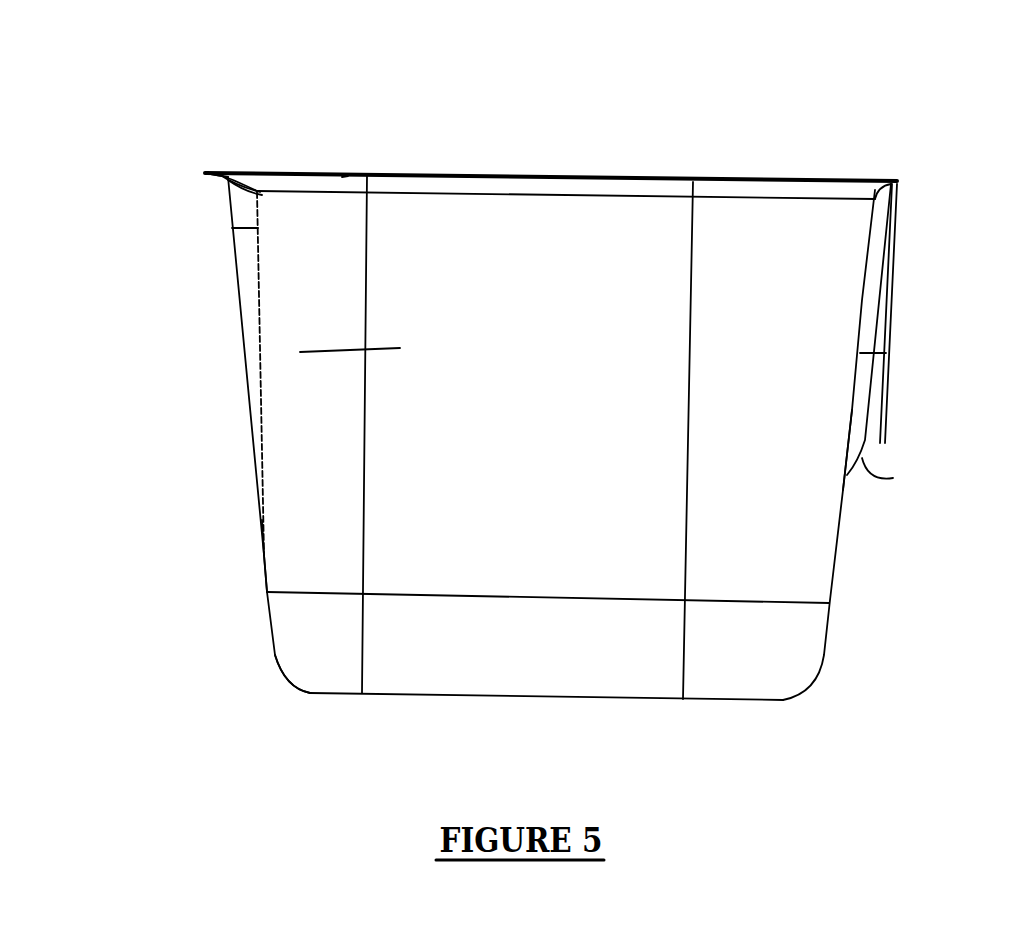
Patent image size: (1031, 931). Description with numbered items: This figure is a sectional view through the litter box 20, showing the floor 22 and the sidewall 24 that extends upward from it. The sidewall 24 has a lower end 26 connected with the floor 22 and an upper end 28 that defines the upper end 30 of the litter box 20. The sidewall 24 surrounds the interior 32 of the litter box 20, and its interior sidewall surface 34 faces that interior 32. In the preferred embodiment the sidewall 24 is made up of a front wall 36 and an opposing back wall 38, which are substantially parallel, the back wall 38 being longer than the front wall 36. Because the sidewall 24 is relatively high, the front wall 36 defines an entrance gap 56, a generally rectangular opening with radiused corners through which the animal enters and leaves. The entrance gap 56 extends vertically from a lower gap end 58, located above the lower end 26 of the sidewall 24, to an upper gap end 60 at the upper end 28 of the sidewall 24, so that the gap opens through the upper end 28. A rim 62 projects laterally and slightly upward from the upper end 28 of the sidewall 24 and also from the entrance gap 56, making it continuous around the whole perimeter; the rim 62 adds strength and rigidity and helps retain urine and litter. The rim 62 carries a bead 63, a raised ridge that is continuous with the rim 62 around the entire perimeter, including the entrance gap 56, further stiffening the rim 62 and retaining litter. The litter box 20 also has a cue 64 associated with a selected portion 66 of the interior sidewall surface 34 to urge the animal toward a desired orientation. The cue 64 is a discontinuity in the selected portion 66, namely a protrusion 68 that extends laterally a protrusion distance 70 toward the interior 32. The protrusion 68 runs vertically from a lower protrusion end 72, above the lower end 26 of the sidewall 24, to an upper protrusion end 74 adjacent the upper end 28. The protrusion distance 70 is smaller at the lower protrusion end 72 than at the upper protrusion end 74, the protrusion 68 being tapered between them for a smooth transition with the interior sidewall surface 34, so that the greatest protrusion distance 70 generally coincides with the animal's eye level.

The litter box 20 is at (549, 404).
The floor 22 is at (447, 700).
The sidewall 24 is at (836, 568).
The lower end 26 is at (273, 658).
The upper end 28 is at (822, 193).
The upper end of the litter box 30 is at (455, 168).
The interior 32 is at (565, 267).
The interior sidewall surface 34 is at (833, 535).
The front wall 36 is at (829, 635).
The back wall 38 is at (263, 573).
The entrance gap 56 is at (898, 348).
The lower gap end 58 is at (904, 480).
The upper gap end 60 is at (905, 182).
The rim 62 is at (305, 178).
The bead 63 is at (342, 177).
The cue 64 is at (212, 140).
The selected portion 66 is at (312, 346).
The protrusion 68 is at (245, 282).
The protrusion distance 70 is at (248, 223).
The lower protrusion end 72 is at (265, 506).
The upper protrusion end 74 is at (262, 195).